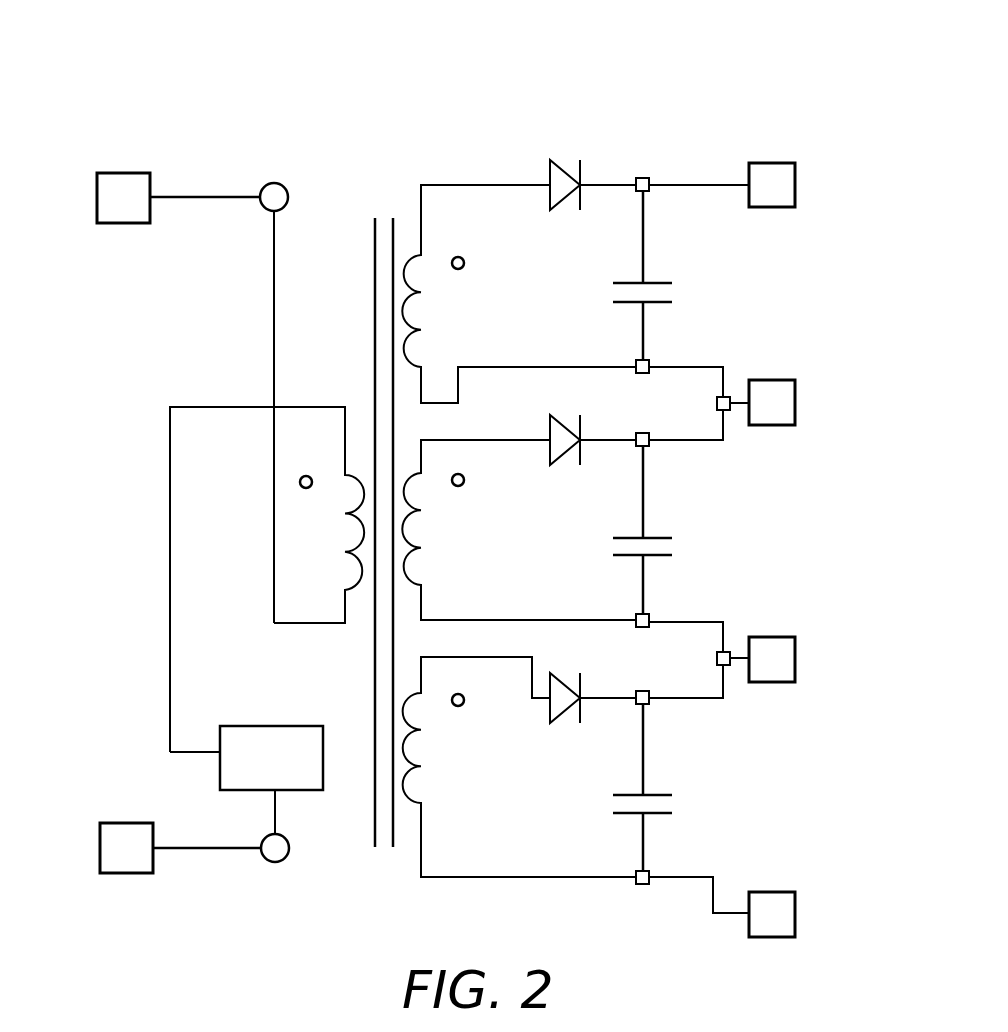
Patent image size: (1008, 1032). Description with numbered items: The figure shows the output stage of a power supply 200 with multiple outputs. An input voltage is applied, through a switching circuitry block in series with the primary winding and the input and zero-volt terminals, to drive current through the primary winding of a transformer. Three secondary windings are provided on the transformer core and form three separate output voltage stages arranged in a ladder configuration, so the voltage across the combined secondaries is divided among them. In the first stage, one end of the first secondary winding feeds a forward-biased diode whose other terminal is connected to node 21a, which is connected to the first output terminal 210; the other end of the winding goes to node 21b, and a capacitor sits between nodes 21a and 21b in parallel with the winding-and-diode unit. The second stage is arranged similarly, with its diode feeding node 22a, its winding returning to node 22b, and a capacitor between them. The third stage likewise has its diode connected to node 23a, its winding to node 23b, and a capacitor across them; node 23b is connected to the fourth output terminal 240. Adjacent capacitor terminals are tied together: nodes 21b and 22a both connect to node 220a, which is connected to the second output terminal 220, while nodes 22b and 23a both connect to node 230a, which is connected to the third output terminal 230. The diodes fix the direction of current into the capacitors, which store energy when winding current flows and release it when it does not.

The power supply 200 is at (262, 84).
The first output terminal 210 is at (797, 180).
The second output terminal 220 is at (797, 405).
The third output terminal 230 is at (797, 660).
The fourth output terminal 240 is at (797, 915).
The node 21a is at (650, 192).
The node 21b is at (650, 362).
The node 22a is at (650, 447).
The node 22b is at (650, 616).
The node 23a is at (650, 705).
The node 23b is at (650, 873).
The node 220a is at (716, 403).
The node 230a is at (716, 658).